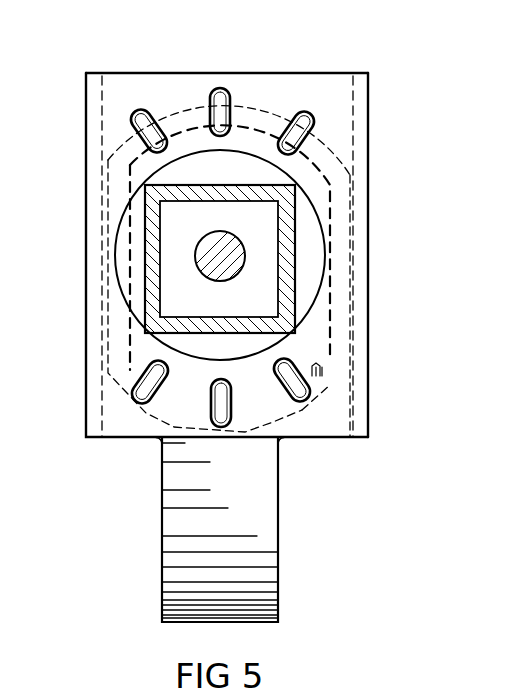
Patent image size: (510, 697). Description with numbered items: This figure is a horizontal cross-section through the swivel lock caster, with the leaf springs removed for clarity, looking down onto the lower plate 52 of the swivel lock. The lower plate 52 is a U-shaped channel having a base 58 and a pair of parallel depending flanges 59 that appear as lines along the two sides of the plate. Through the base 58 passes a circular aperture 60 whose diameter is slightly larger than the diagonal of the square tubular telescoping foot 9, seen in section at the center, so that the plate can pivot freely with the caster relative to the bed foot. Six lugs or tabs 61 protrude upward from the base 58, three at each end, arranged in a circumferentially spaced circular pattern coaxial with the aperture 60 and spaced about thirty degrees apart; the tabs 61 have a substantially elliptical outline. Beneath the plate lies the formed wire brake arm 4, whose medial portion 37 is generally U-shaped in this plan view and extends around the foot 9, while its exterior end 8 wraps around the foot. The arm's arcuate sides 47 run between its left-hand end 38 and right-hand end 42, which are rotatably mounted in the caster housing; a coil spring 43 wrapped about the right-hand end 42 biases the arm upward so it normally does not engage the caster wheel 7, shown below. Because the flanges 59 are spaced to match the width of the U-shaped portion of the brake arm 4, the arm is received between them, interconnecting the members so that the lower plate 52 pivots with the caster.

The brake arm 4 is at (370, 165).
The caster wheel 7 is at (175, 576).
The exterior end 8 is at (108, 162).
The telescoping foot 9 is at (288, 258).
The medial portion 37 is at (262, 116).
The left-hand end 38 is at (116, 418).
The right-hand end 42 is at (330, 392).
The coil spring 43 is at (310, 393).
The sides 47 is at (113, 283).
The lower plate 52 is at (364, 113).
The base 58 is at (246, 82).
The depending flanges 59 is at (96, 92).
The circular aperture 60 is at (133, 173).
The tabs 61 is at (212, 120).